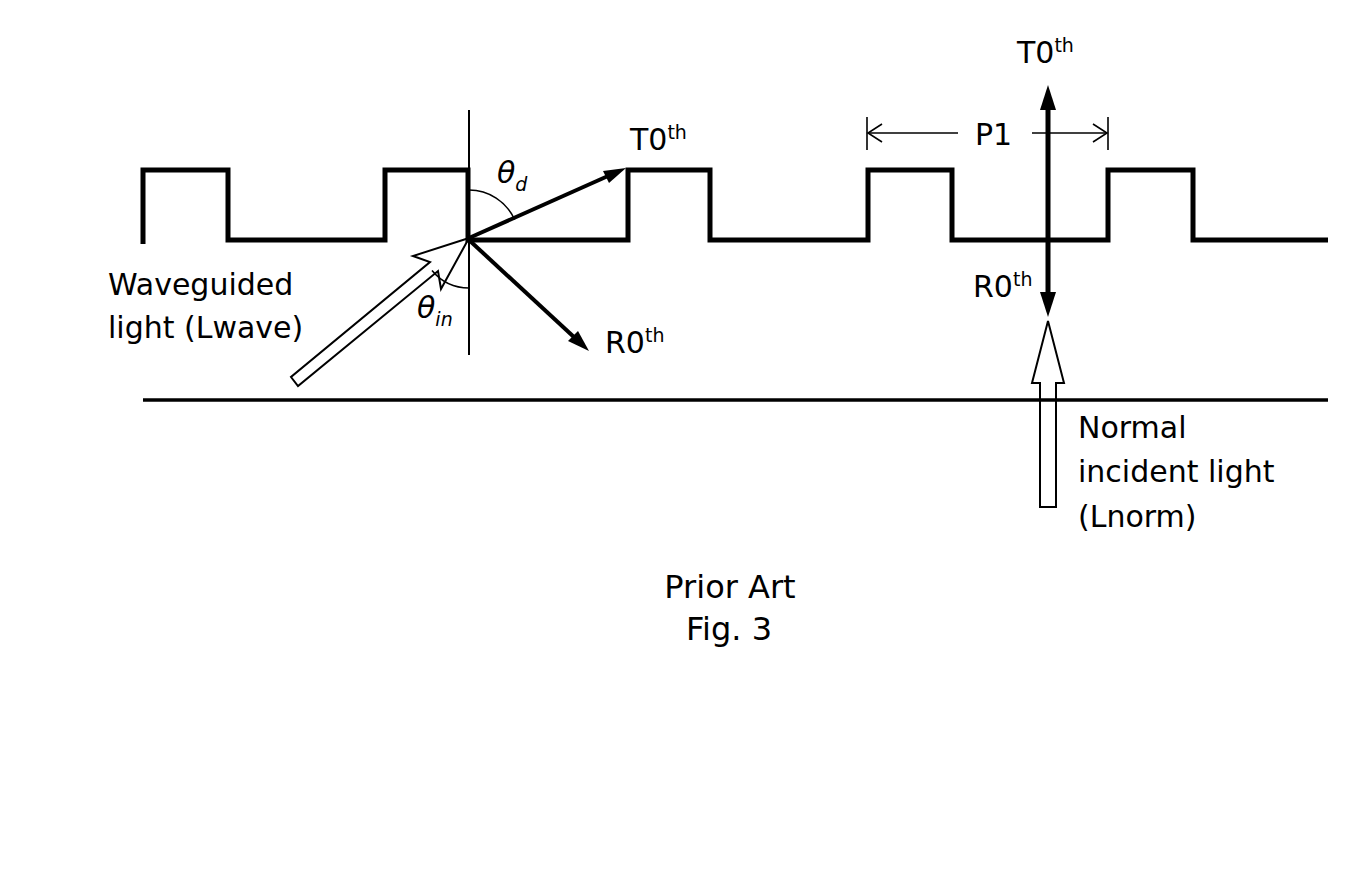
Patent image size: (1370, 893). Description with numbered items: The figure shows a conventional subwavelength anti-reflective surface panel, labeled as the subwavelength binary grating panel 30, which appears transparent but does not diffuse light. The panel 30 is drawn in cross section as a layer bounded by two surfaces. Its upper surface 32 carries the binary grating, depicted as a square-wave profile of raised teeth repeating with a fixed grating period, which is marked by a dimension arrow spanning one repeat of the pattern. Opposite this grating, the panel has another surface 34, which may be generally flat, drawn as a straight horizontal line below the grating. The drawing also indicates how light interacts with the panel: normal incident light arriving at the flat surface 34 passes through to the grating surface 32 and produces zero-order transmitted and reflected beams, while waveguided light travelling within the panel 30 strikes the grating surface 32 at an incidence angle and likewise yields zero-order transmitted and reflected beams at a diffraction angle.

The subwavelength binary grating panel 30 is at (717, 292).
The surface 32 is at (196, 165).
The another surface 34 is at (203, 408).